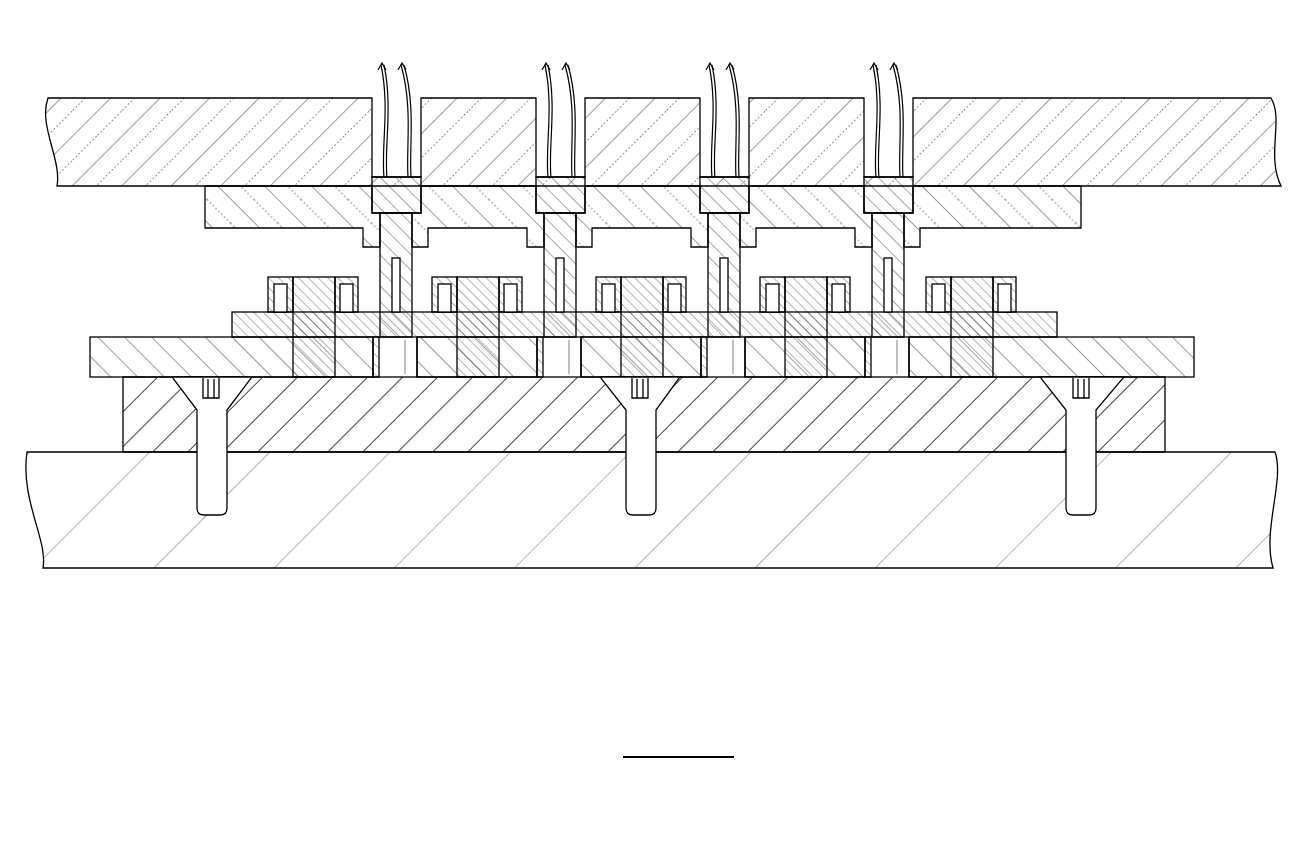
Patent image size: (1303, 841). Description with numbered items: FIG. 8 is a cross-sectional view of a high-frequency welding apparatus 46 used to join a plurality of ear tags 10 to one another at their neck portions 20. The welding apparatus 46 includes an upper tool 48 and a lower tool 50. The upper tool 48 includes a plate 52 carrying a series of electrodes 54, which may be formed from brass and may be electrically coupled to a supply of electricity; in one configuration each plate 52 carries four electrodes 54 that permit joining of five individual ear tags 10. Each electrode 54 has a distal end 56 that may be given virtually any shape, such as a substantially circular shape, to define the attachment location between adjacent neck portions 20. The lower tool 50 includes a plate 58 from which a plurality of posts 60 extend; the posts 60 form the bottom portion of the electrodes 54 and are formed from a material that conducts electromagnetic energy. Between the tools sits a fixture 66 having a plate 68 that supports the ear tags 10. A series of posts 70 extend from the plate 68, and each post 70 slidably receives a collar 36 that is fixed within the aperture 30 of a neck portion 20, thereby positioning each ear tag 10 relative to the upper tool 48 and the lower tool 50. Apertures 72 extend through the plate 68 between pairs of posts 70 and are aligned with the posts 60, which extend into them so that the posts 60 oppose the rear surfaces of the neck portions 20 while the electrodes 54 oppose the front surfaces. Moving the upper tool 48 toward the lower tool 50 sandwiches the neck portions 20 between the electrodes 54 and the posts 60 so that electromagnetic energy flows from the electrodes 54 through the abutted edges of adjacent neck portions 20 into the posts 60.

The ear tag 10 is at (647, 365).
The neck portion 20 is at (252, 312).
The aperture 30 is at (293, 292).
The collar 36 is at (285, 291).
The high-frequency welding apparatus 46 is at (1172, 68).
The upper tool 48 is at (1232, 176).
The lower tool 50 is at (1205, 458).
The plate 52 is at (205, 210).
The electrode 54 is at (385, 196).
The distal end 56 is at (373, 345).
The plate 58 is at (123, 410).
The post 60 is at (391, 358).
The fixture 66 is at (646, 383).
The plate 68 is at (1122, 337).
The post 70 is at (316, 312).
The aperture 72 is at (412, 360).